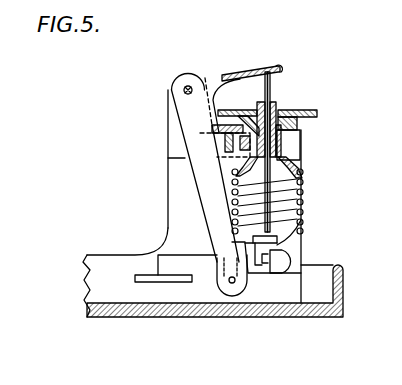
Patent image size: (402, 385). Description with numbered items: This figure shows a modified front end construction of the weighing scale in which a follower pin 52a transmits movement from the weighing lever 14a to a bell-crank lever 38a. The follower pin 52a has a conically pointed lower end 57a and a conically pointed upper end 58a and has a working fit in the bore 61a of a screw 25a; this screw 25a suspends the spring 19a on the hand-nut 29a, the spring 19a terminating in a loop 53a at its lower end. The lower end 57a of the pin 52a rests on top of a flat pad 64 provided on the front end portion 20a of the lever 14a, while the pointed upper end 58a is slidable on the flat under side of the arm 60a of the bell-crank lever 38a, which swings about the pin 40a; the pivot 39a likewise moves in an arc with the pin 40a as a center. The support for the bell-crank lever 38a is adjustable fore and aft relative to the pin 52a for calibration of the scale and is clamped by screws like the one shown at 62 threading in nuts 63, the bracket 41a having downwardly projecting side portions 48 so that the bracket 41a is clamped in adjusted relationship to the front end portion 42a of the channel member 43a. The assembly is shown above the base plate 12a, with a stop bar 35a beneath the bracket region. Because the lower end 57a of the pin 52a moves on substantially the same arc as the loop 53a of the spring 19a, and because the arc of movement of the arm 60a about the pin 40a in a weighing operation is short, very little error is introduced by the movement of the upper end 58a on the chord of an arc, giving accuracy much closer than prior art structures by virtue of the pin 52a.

The base plate 12a is at (338, 302).
The lever 14a is at (256, 268).
The spring 19a is at (303, 185).
The front end portion of the lever 20a is at (280, 275).
The screw 25a is at (292, 111).
The hand-nut 29a is at (317, 115).
The stop bar 35a is at (141, 283).
The bell-crank lever 38a is at (185, 177).
The pivot 39a is at (230, 284).
The pin 40a is at (184, 91).
The bracket 41a is at (175, 122).
The front end portion of the channel member 42a is at (177, 213).
The channel member 43a is at (108, 263).
The downwardly projecting side portions 48 is at (168, 160).
The follower pin 52a is at (272, 90).
The loop 53a is at (271, 257).
The conically pointed lower end 57a is at (280, 230).
The conically pointed upper end 58a is at (279, 74).
The arm 60a is at (278, 69).
The bore 61a is at (277, 147).
The screw 62 is at (226, 130).
The nut 63 is at (222, 140).
The flat pad 64 is at (250, 235).